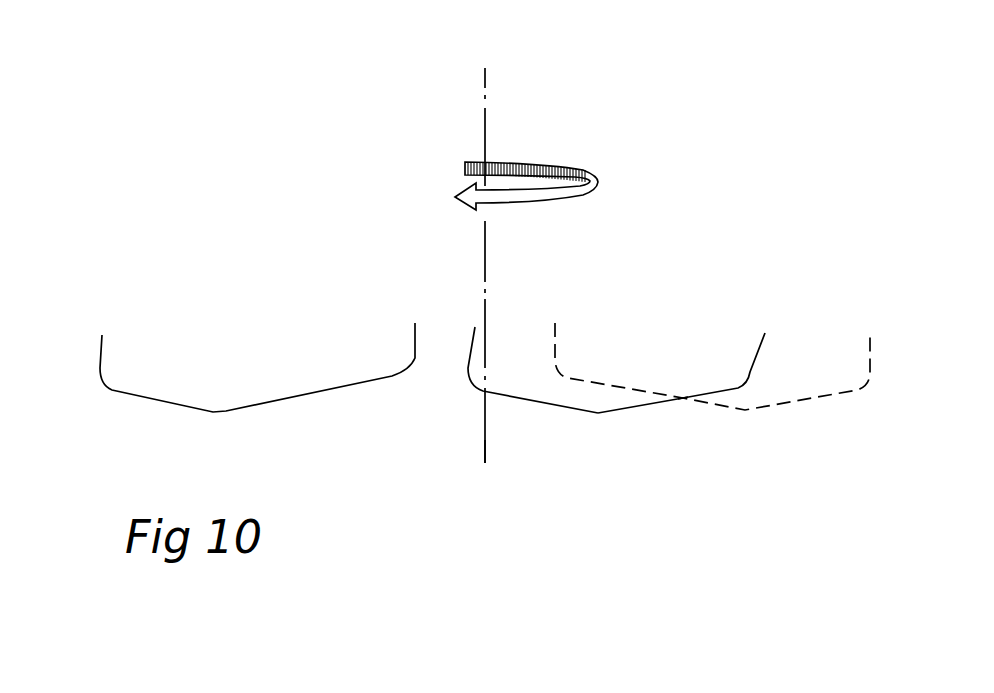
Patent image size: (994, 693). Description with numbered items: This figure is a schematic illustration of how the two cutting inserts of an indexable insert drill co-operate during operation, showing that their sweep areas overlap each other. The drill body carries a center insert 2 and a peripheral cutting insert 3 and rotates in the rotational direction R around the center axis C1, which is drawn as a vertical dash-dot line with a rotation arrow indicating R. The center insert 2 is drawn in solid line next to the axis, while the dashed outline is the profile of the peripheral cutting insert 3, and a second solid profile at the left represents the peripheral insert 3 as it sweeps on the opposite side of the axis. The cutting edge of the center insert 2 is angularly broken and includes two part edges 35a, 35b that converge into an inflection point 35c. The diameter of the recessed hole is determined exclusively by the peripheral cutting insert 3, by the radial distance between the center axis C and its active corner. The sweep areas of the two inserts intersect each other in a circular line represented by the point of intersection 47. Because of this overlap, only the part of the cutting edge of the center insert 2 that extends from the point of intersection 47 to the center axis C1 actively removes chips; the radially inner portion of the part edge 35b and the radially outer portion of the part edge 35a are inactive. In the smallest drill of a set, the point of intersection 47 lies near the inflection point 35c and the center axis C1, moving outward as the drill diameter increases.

The center insert 2 is at (737, 366).
The peripheral cutting insert 3 is at (178, 388).
The part edge 35a is at (636, 409).
The part edge 35b is at (516, 398).
The inflection point 35c is at (600, 414).
The point of intersection 47 is at (683, 400).
The center axis C is at (480, 447).
The center axis C1 is at (485, 85).
The rotational direction R is at (526, 168).